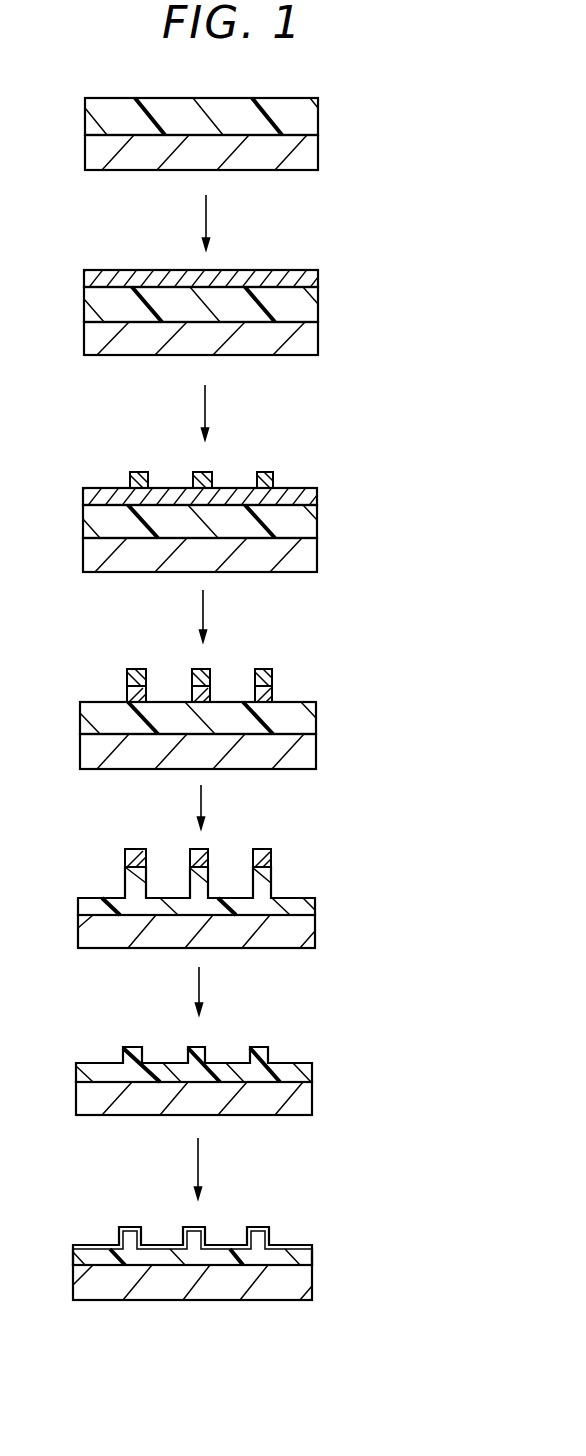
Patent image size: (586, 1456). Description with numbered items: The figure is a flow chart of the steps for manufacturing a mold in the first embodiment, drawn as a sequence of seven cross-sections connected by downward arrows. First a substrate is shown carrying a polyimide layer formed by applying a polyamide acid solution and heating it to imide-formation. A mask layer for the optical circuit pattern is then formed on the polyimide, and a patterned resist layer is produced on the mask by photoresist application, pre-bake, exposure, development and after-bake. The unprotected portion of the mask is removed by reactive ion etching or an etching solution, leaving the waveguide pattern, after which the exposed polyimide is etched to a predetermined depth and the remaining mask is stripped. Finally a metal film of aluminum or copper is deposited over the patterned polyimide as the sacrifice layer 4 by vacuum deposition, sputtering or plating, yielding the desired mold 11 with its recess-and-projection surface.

The sacrifice layer 4 is at (293, 1243).
The mold 11 is at (258, 1240).